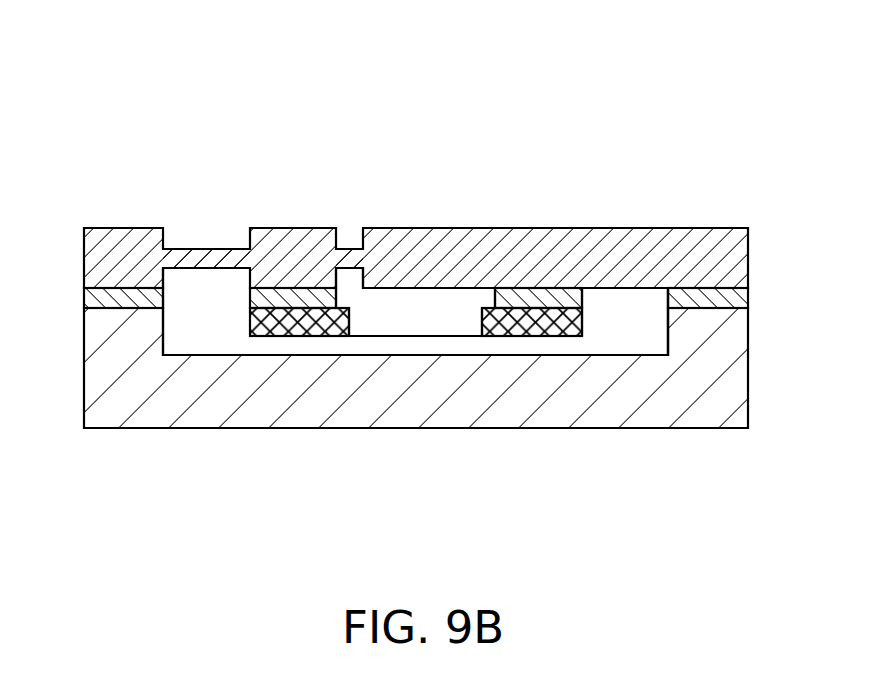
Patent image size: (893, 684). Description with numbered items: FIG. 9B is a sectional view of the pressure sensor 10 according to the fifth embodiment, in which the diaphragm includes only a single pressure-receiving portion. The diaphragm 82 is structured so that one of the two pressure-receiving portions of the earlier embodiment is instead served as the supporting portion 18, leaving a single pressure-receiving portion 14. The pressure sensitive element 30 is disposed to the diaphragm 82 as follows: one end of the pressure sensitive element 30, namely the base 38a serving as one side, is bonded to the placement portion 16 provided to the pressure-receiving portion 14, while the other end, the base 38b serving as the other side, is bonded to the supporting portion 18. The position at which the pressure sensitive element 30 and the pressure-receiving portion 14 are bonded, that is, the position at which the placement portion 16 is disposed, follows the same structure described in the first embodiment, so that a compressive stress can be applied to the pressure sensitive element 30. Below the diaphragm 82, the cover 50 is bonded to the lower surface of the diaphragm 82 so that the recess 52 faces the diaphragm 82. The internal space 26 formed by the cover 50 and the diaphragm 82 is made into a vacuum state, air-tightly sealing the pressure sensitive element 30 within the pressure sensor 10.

The pressure sensor 10 is at (666, 209).
The pressure-receiving portion 14 is at (198, 249).
The placement portion 16 is at (237, 268).
The supporting portion 18 is at (576, 228).
The internal space 26 is at (595, 342).
The pressure sensitive element 30 is at (437, 340).
The base 38a is at (303, 337).
The base 38b is at (553, 337).
The cover 50 is at (707, 431).
The recess 52 is at (206, 352).
The diaphragm 82 is at (519, 226).